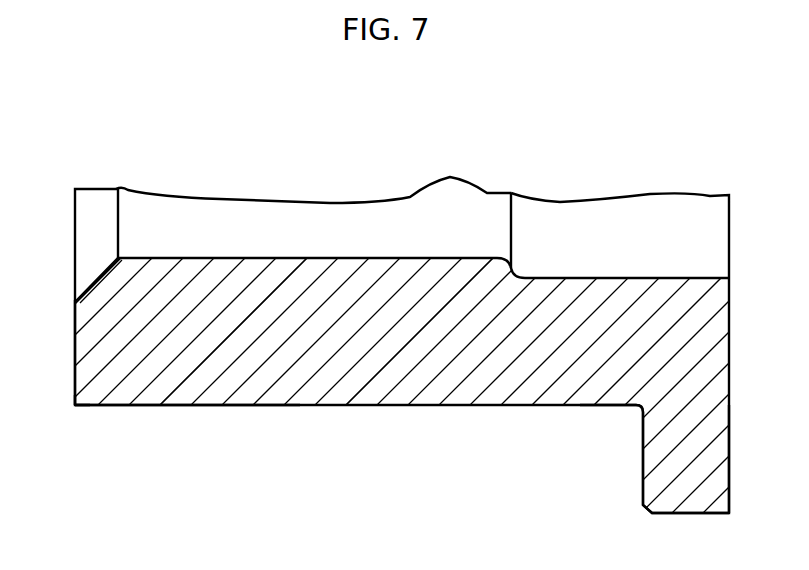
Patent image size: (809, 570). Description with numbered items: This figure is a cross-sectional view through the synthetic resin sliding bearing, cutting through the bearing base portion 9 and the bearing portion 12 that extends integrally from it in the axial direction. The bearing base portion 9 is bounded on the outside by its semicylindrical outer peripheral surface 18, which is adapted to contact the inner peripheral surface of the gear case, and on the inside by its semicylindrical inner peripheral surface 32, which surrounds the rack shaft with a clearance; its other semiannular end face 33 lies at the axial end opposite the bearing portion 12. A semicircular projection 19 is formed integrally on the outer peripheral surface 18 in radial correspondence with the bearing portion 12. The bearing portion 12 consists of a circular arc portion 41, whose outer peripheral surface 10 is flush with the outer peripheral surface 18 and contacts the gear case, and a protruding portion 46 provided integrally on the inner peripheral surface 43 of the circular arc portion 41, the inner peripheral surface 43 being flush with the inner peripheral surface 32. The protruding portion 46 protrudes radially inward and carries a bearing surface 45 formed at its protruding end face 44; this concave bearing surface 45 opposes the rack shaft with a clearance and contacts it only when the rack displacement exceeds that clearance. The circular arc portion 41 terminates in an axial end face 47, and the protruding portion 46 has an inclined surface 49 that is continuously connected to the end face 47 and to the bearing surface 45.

The bearing base portion 9 is at (590, 338).
The outer peripheral surface 10 is at (262, 407).
The bearing portion 12 is at (67, 342).
The outer peripheral surface 18 is at (597, 407).
The semicircular projection 19 is at (688, 473).
The inner peripheral surface 32 is at (668, 230).
The end face 33 is at (729, 374).
The circular arc portion 41 is at (198, 340).
The inner peripheral surface 43 is at (535, 278).
The protruding end face 44 is at (370, 258).
The bearing surface 45 is at (140, 258).
The protruding portion 46 is at (275, 275).
The end face 47 is at (76, 386).
The inclined surface 49 is at (96, 233).